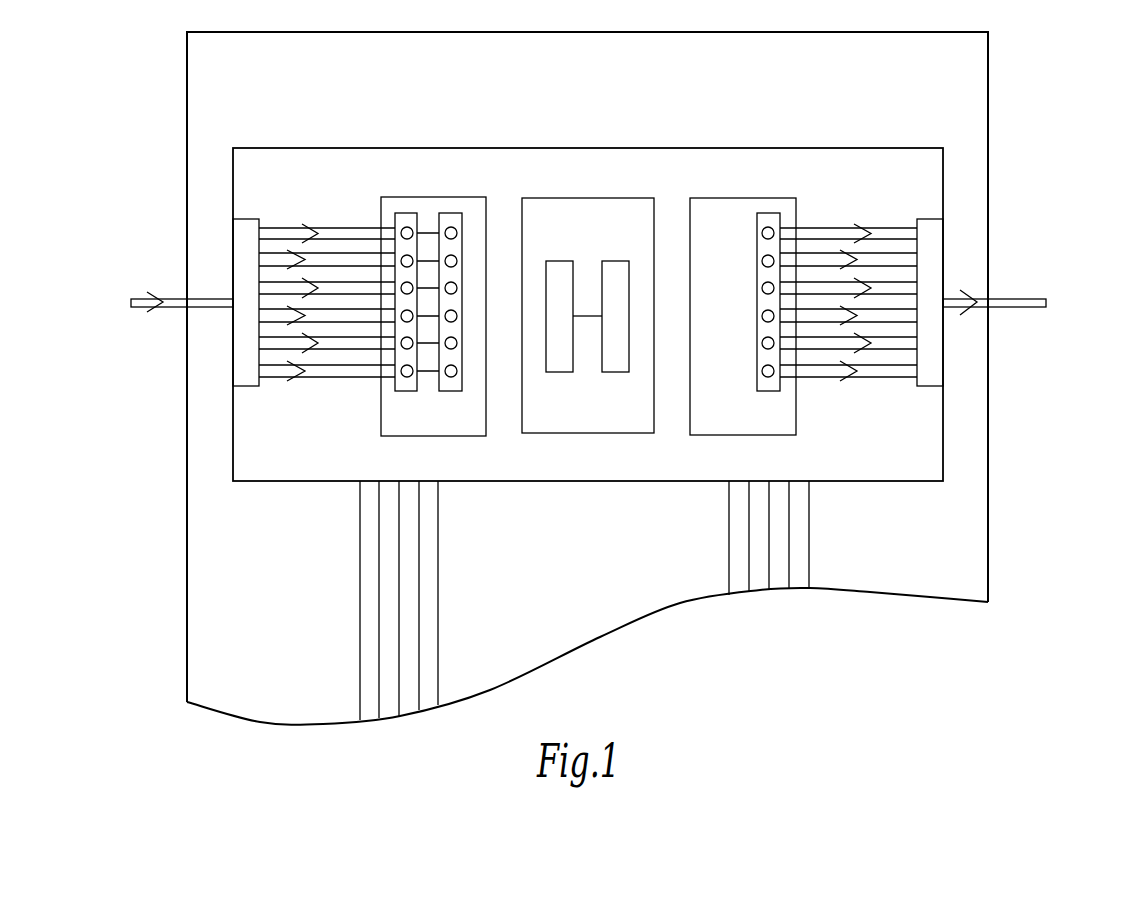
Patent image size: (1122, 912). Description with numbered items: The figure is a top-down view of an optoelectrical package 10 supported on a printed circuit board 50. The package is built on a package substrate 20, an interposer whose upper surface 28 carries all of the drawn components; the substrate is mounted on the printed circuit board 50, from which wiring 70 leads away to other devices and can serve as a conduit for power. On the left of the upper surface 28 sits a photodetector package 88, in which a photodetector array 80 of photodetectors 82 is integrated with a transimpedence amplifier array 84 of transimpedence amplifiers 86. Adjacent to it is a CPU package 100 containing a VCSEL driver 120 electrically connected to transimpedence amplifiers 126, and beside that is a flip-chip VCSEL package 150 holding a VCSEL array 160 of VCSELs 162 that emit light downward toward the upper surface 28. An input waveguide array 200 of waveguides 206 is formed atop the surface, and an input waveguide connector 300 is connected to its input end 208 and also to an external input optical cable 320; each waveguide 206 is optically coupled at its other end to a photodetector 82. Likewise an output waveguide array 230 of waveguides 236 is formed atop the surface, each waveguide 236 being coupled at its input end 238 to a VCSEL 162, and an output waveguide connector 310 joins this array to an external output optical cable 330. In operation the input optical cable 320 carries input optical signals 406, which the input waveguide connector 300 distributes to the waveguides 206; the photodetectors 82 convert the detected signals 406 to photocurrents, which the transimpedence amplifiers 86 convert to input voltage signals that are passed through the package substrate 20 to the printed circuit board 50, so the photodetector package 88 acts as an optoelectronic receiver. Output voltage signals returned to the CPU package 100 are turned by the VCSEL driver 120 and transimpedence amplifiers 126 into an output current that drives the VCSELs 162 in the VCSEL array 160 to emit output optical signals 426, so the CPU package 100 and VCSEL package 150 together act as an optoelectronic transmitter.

The optoelectrical package 10 is at (648, 157).
The package substrate 20 is at (597, 467).
The upper surface 28 is at (884, 456).
The printed circuit board 50 is at (982, 560).
The wiring 70 is at (457, 547).
The photodetector array 80 is at (400, 213).
The photodetectors 82 is at (407, 373).
The transimpedence amplifier array 84 is at (445, 213).
The transimpedence amplifiers 86 is at (450, 373).
The photodetector package 88 is at (388, 200).
The CPU package 100 is at (572, 200).
The VCSEL driver 120 is at (561, 365).
The transimpedence amplifiers 126 is at (615, 365).
The VCSEL package 150 is at (730, 200).
The VCSEL array 160 is at (765, 218).
The VCSELs 162 is at (762, 260).
The input waveguide array 200 is at (302, 180).
The waveguides 206 is at (365, 230).
The input end 208 is at (282, 230).
The output waveguide array 230 is at (873, 181).
The waveguides 236 is at (895, 230).
The input end 238 is at (808, 232).
The input waveguide connector 300 is at (245, 235).
The output waveguide connector 310 is at (932, 240).
The input optical cable 320 is at (131, 305).
The output optical cable 330 is at (1040, 310).
The input optical signals 406 is at (150, 293).
The output optical signals 426 is at (963, 290).